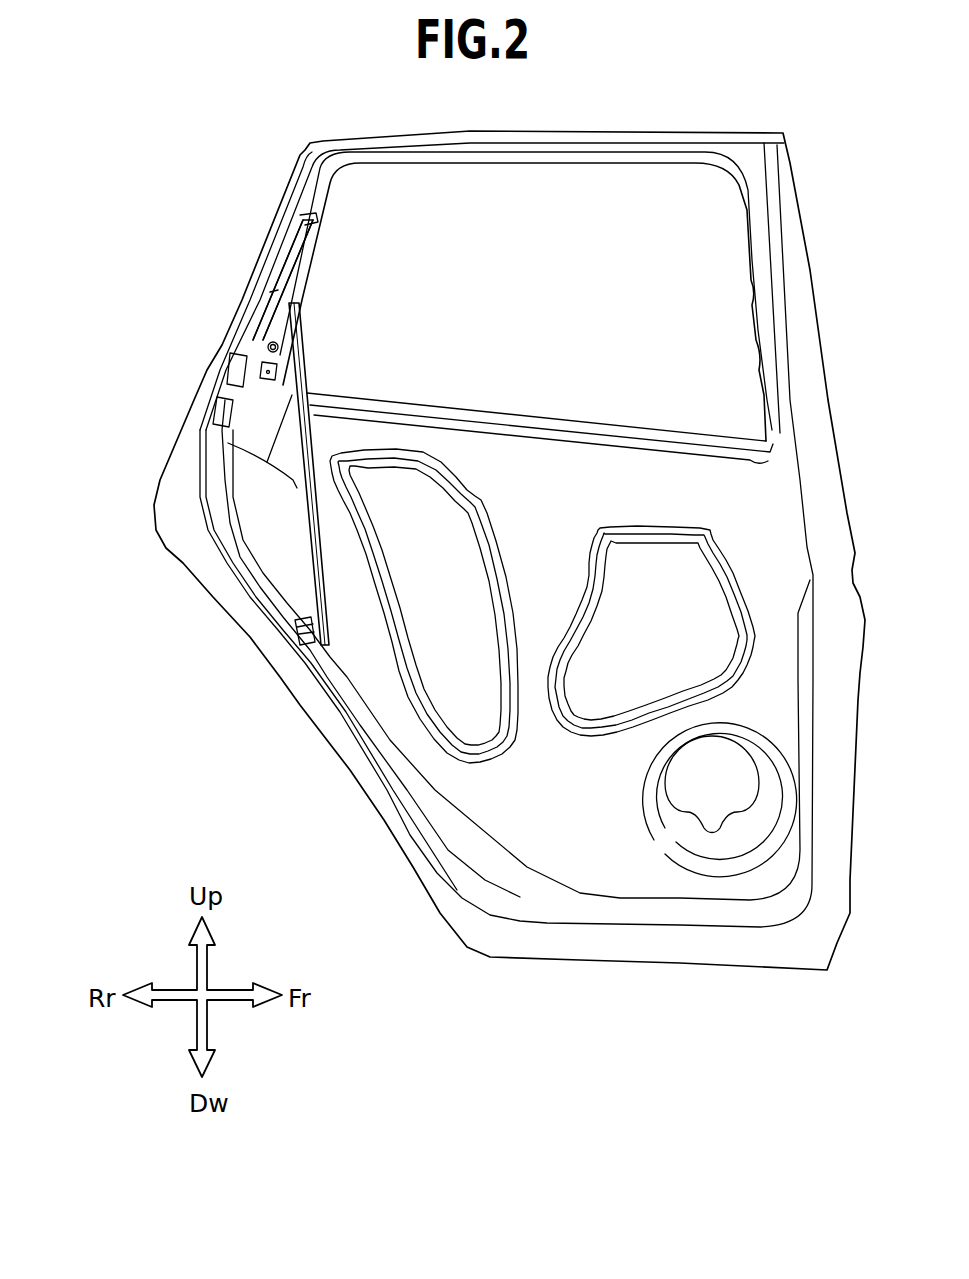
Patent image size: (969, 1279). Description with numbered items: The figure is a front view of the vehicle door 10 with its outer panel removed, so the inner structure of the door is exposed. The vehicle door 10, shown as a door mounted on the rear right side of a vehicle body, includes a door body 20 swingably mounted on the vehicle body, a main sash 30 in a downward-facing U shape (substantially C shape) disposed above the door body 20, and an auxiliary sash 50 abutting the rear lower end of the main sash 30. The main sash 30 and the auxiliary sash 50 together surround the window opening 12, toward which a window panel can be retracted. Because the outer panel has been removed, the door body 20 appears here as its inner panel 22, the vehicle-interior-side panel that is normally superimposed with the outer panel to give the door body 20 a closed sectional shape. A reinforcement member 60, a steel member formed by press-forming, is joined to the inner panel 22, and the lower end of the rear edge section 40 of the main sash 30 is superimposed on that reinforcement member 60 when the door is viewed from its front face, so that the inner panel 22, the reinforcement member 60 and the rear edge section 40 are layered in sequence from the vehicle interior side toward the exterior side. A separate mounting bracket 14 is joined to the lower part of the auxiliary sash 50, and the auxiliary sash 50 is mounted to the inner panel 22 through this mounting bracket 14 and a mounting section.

The vehicle door 10 is at (133, 220).
The window opening 12 is at (550, 326).
The mounting bracket 14 is at (300, 628).
The door body 20 is at (172, 443).
The inner panel 22 is at (245, 635).
The main sash 30 is at (290, 260).
The rear edge section 40 is at (247, 243).
The auxiliary sash 50 is at (304, 535).
The reinforcement member 60 is at (229, 380).